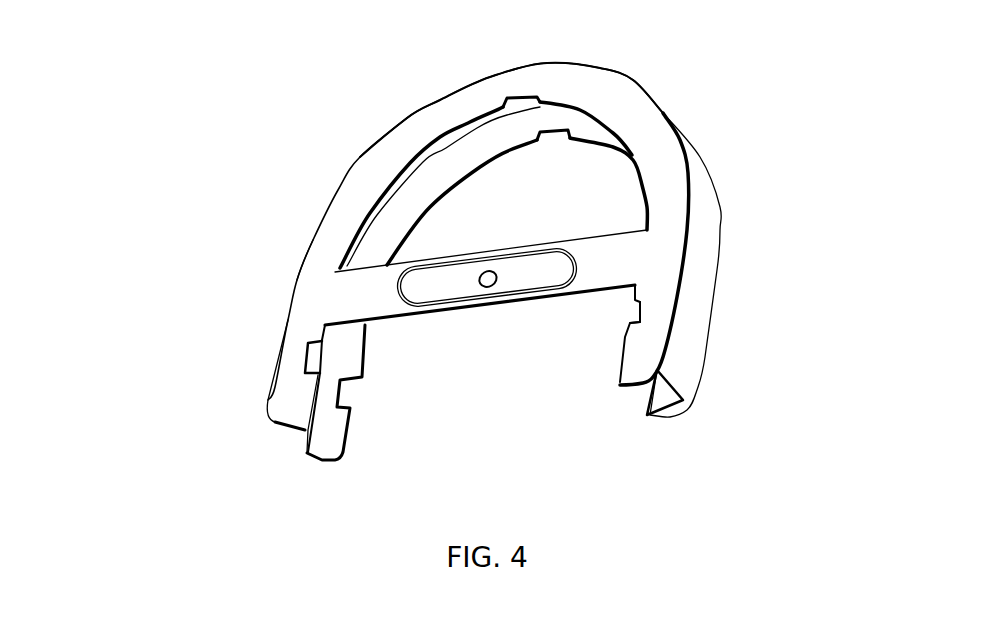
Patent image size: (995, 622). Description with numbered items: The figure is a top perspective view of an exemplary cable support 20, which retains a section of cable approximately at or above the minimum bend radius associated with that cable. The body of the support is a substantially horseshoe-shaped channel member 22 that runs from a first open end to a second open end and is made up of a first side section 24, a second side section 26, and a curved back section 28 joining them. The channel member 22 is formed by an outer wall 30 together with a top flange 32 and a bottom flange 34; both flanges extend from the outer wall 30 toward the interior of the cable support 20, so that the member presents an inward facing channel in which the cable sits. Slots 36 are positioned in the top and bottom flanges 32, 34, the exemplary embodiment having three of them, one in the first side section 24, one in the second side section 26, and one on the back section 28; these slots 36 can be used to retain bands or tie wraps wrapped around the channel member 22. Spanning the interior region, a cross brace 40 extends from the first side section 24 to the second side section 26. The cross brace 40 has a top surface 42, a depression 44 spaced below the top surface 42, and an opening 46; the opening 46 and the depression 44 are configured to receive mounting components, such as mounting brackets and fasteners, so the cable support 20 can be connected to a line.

The cable support 20 is at (178, 221).
The channel member 22 is at (383, 197).
The first side section 24 is at (676, 295).
The second side section 26 is at (274, 362).
The curved back section 28 is at (636, 82).
The outer wall 30 is at (712, 210).
The top flange 32 is at (292, 405).
The bottom flange 34 is at (330, 445).
The slots 36 is at (503, 96).
The cross brace 40 is at (315, 284).
The top surface 42 is at (603, 278).
The depression 44 is at (521, 282).
The opening 46 is at (480, 283).